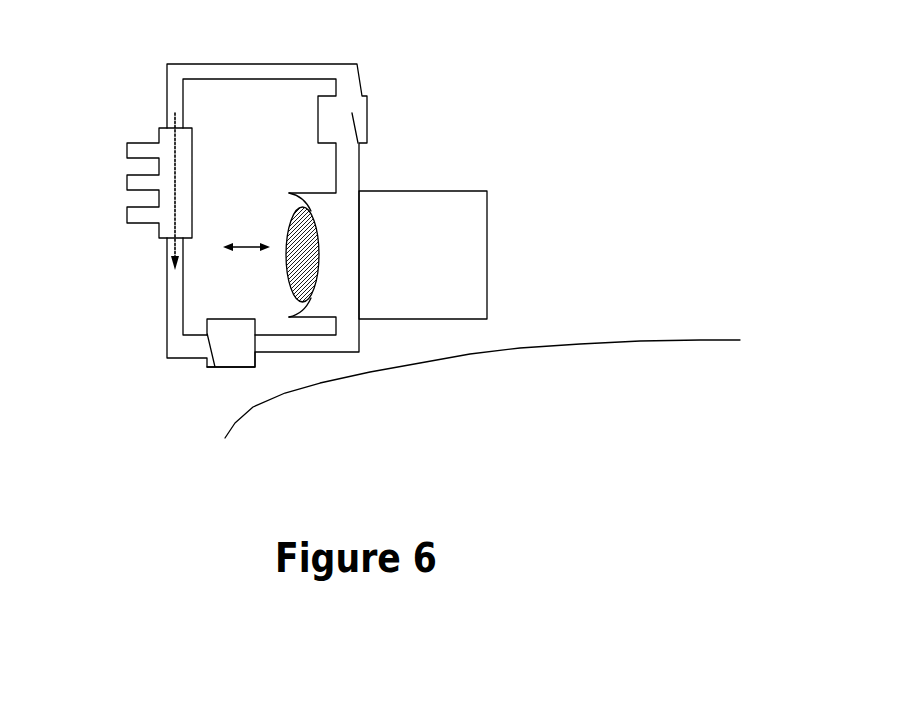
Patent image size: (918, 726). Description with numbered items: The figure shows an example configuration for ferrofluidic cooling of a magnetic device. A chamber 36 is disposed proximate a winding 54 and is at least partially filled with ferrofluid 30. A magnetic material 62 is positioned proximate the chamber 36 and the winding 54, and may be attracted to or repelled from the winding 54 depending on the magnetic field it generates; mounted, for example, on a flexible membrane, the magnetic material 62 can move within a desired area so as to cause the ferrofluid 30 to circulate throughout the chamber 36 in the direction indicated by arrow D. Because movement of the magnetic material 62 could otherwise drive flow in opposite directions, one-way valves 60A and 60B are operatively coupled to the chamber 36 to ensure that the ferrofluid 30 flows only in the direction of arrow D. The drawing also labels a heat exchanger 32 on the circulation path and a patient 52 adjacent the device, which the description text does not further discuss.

The ferrofluid 30 is at (392, 36).
The heat exchanger 32 is at (127, 131).
The chamber 36 is at (157, 281).
The patient 52 is at (482, 389).
The winding 54 is at (423, 255).
The one-way valve 60A is at (425, 92).
The one-way valve 60B is at (222, 377).
The magnetic material 62 is at (279, 204).